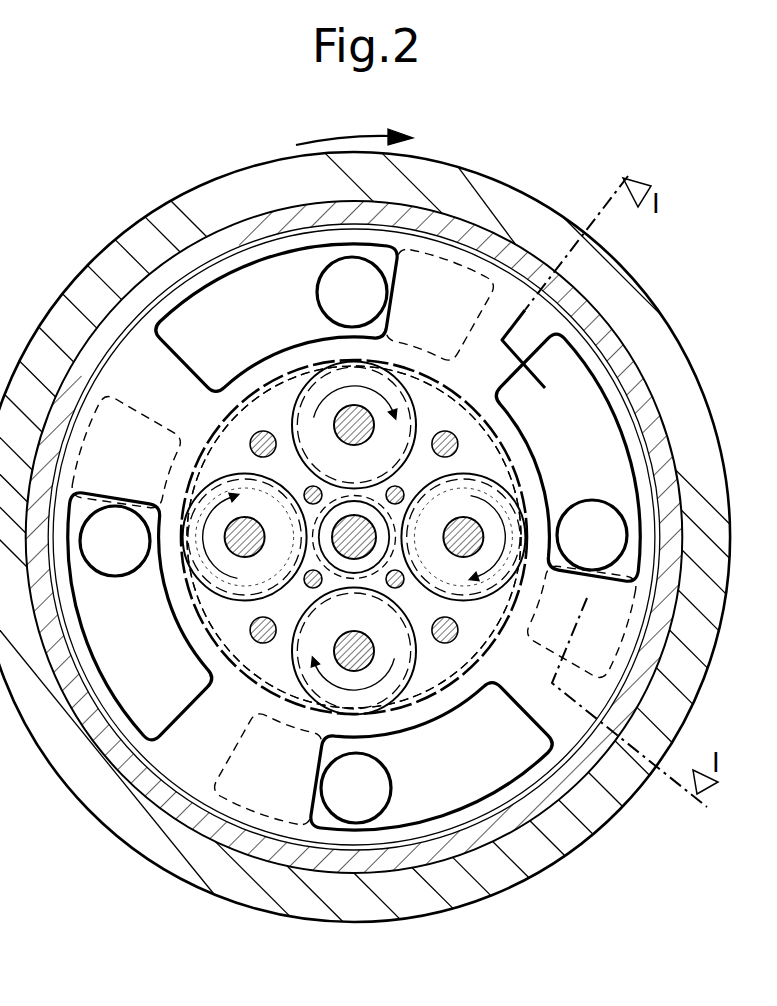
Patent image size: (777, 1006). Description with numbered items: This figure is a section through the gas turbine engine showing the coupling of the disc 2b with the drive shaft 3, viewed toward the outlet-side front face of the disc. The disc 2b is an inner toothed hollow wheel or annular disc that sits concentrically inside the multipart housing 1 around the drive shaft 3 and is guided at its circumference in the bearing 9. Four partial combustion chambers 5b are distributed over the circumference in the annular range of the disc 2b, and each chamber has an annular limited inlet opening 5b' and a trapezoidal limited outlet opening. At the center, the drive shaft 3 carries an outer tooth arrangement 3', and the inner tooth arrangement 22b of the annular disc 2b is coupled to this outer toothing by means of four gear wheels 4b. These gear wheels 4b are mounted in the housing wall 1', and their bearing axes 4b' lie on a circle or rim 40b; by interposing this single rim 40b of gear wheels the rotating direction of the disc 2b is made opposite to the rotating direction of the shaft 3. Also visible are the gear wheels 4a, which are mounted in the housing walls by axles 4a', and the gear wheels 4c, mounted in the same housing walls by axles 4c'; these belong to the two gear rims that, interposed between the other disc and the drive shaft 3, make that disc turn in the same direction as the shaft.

The housing 1 is at (365, 535).
The housing wall 1' is at (354, 537).
The bearing 9 is at (488, 236).
The disc 2b is at (162, 398).
The drive shaft 3 is at (354, 570).
The outer tooth arrangement 3' is at (334, 537).
The gear wheels 4a is at (331, 575).
The axles 4a' is at (380, 493).
The gear wheels 4b is at (330, 538).
The bearing axes 4b' is at (305, 512).
The gear wheels 4c is at (249, 537).
The axles 4c' is at (459, 537).
The partial combustion chambers 5b is at (354, 537).
The inlet opening 5b' is at (353, 540).
The inner tooth arrangement 22b is at (426, 391).
The rim 40b is at (247, 394).